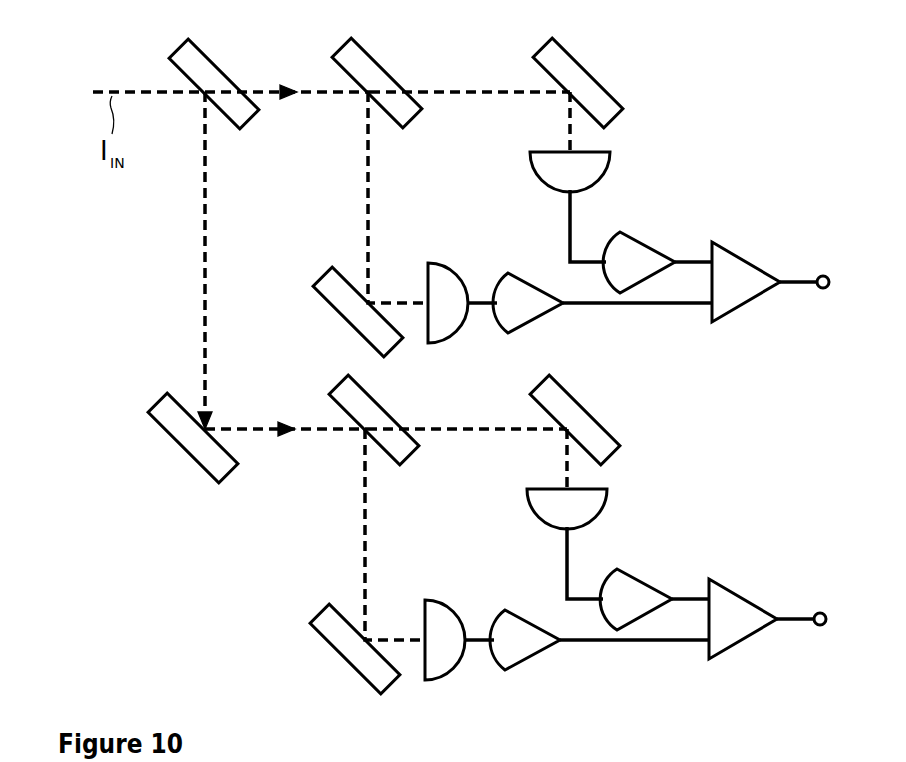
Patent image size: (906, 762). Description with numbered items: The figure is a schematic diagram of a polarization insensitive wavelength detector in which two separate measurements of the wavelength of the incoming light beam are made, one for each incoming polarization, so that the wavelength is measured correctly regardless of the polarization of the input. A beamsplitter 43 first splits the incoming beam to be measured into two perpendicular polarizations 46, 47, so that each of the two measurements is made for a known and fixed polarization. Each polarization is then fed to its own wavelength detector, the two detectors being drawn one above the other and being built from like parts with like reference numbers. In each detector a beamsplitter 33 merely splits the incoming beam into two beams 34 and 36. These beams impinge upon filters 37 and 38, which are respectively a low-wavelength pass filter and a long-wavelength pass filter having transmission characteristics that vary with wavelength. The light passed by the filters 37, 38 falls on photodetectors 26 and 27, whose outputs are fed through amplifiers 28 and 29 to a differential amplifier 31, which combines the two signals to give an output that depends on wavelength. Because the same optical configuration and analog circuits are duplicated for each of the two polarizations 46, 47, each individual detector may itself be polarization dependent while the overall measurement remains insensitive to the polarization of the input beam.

The beamsplitter 43 is at (218, 78).
The polarization 46 is at (303, 96).
The polarization 47 is at (205, 207).
The beam 36 is at (368, 207).
The beamsplitter 33 is at (378, 75).
The beam 34 is at (466, 96).
The filter 37 is at (572, 78).
The photodetector 26 is at (597, 170).
The photodetector 27 is at (446, 283).
The amplifier 28 is at (623, 248).
The amplifier 29 is at (530, 305).
The differential amplifier 31 is at (735, 278).
The filter 38 is at (342, 298).